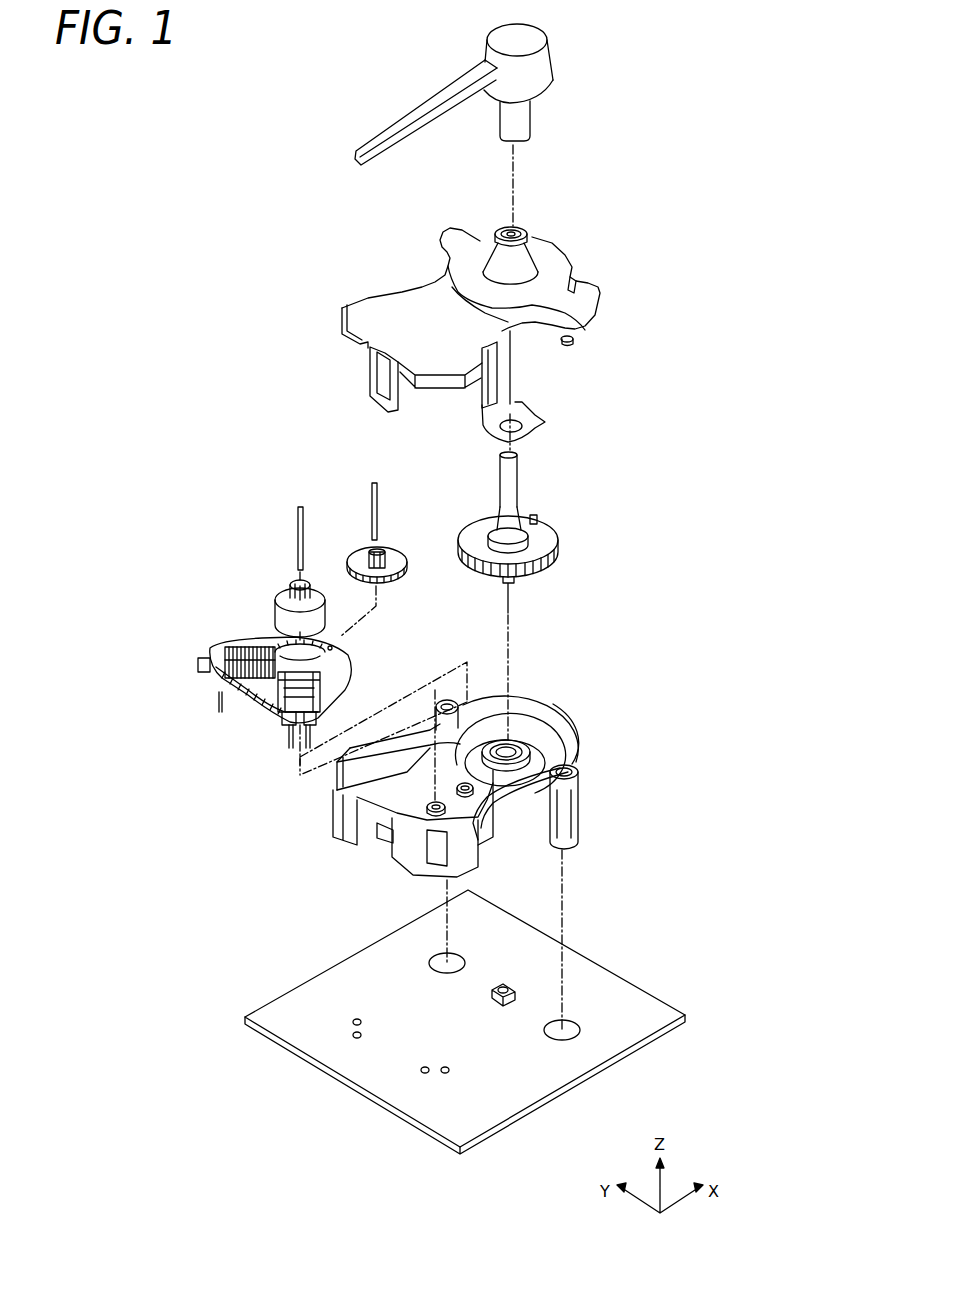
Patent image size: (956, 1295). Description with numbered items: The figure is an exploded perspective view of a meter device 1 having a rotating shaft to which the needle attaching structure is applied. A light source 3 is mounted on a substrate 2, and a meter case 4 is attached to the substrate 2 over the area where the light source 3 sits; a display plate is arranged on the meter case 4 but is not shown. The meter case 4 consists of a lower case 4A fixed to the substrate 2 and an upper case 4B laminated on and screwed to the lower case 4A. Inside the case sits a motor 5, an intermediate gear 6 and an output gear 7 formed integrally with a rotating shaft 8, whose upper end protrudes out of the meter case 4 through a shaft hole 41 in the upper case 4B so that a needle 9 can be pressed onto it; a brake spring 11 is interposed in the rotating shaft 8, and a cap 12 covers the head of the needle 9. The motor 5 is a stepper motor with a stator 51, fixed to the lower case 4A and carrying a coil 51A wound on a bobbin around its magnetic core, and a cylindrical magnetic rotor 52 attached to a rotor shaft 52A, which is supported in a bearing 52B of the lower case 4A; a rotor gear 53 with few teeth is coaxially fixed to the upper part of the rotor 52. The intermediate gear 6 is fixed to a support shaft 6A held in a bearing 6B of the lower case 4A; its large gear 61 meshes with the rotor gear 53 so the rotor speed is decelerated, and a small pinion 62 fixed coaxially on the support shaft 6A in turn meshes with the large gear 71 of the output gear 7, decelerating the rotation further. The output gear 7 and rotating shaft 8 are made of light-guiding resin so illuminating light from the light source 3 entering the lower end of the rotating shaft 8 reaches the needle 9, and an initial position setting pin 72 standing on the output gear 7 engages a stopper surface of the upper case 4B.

The meter device 1 is at (698, 100).
The substrate 2 is at (491, 1002).
The light source 3 is at (507, 990).
The meter case 4 is at (493, 541).
The lower case 4A is at (489, 780).
The upper case 4B is at (533, 313).
The shaft hole 41 is at (503, 222).
The brake spring 11 is at (537, 430).
The cap 12 is at (544, 68).
The needle 9 is at (494, 82).
The rotating shaft 8 is at (512, 482).
The output gear 7 is at (543, 577).
The large gear 71 is at (537, 578).
The initial position setting pin 72 is at (540, 519).
The intermediate gear 6 is at (397, 549).
The support shaft 6A is at (380, 500).
The bearing 6B is at (477, 795).
The large gear 61 is at (403, 578).
The pinion 62 is at (386, 553).
The motor 5 is at (112, 510).
The stator 51 is at (228, 668).
The coil 51A is at (235, 650).
The rotor 52 is at (278, 612).
The rotor shaft 52A is at (297, 533).
The bearing 52B is at (428, 808).
The rotor gear 53 is at (292, 589).